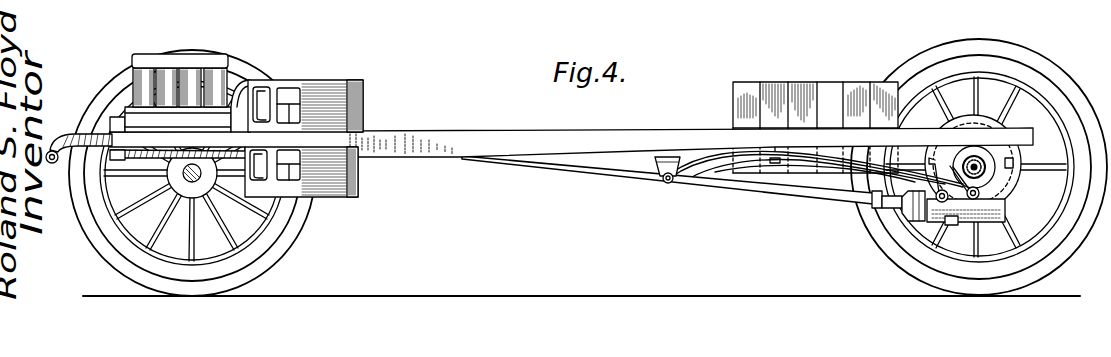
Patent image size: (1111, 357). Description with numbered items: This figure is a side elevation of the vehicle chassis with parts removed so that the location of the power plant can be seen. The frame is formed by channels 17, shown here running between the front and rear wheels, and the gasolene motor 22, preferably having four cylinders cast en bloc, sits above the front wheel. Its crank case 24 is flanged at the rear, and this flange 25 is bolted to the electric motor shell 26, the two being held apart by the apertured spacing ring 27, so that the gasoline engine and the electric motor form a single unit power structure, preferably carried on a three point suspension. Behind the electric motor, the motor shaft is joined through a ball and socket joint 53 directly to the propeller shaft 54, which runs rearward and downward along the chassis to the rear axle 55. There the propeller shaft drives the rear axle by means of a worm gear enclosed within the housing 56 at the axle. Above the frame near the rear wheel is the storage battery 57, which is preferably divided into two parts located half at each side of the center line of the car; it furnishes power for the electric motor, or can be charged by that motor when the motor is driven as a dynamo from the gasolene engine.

The channel 17 is at (62, 134).
The gasolene motor 22 is at (167, 68).
The crank case 24 is at (152, 158).
The flange 25 is at (240, 98).
The electric motor shell 26 is at (340, 95).
The apertured spacing ring 27 is at (293, 88).
The ball and socket joint 53 is at (372, 131).
The propeller shaft 54 is at (634, 186).
The rear axle 55 is at (983, 149).
The housing 56 is at (1000, 155).
The storage battery 57 is at (803, 84).